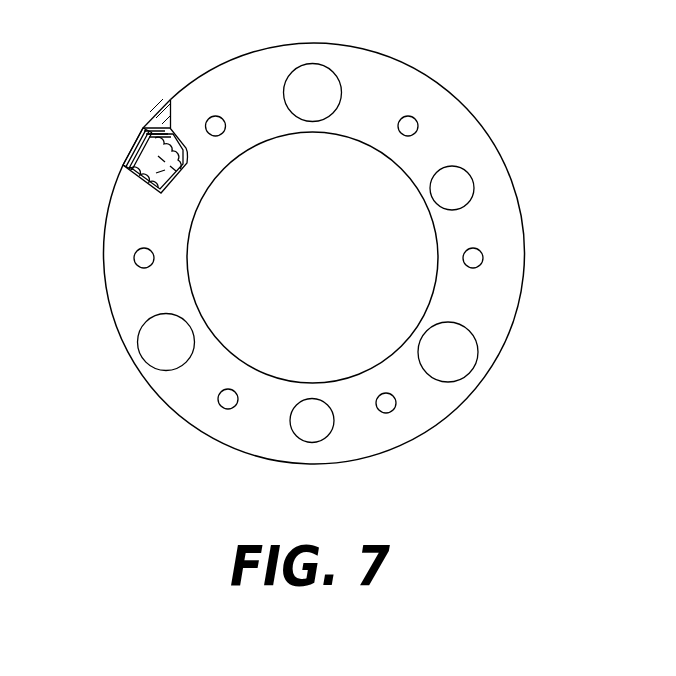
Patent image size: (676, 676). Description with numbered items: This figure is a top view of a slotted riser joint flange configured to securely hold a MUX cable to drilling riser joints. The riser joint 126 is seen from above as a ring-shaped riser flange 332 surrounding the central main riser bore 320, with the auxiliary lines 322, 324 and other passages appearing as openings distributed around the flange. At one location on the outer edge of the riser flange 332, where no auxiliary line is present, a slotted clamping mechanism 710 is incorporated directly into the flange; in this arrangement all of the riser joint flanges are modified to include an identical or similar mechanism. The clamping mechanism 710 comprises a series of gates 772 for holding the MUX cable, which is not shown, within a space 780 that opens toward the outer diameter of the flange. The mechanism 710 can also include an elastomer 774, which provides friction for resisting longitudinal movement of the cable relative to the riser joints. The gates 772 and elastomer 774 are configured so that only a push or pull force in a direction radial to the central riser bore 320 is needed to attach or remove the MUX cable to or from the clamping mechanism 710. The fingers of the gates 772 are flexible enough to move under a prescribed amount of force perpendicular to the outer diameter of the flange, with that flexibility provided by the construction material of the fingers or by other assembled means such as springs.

The riser joint 126 is at (492, 104).
The main riser bore 320 is at (332, 274).
The auxiliary line 322 is at (314, 83).
The auxiliary line 324 is at (155, 348).
The riser flange 332 is at (383, 439).
The slotted clamping mechanism 710 is at (129, 148).
The gates 772 is at (127, 161).
The elastomer 774 is at (164, 198).
The space 780 is at (166, 164).